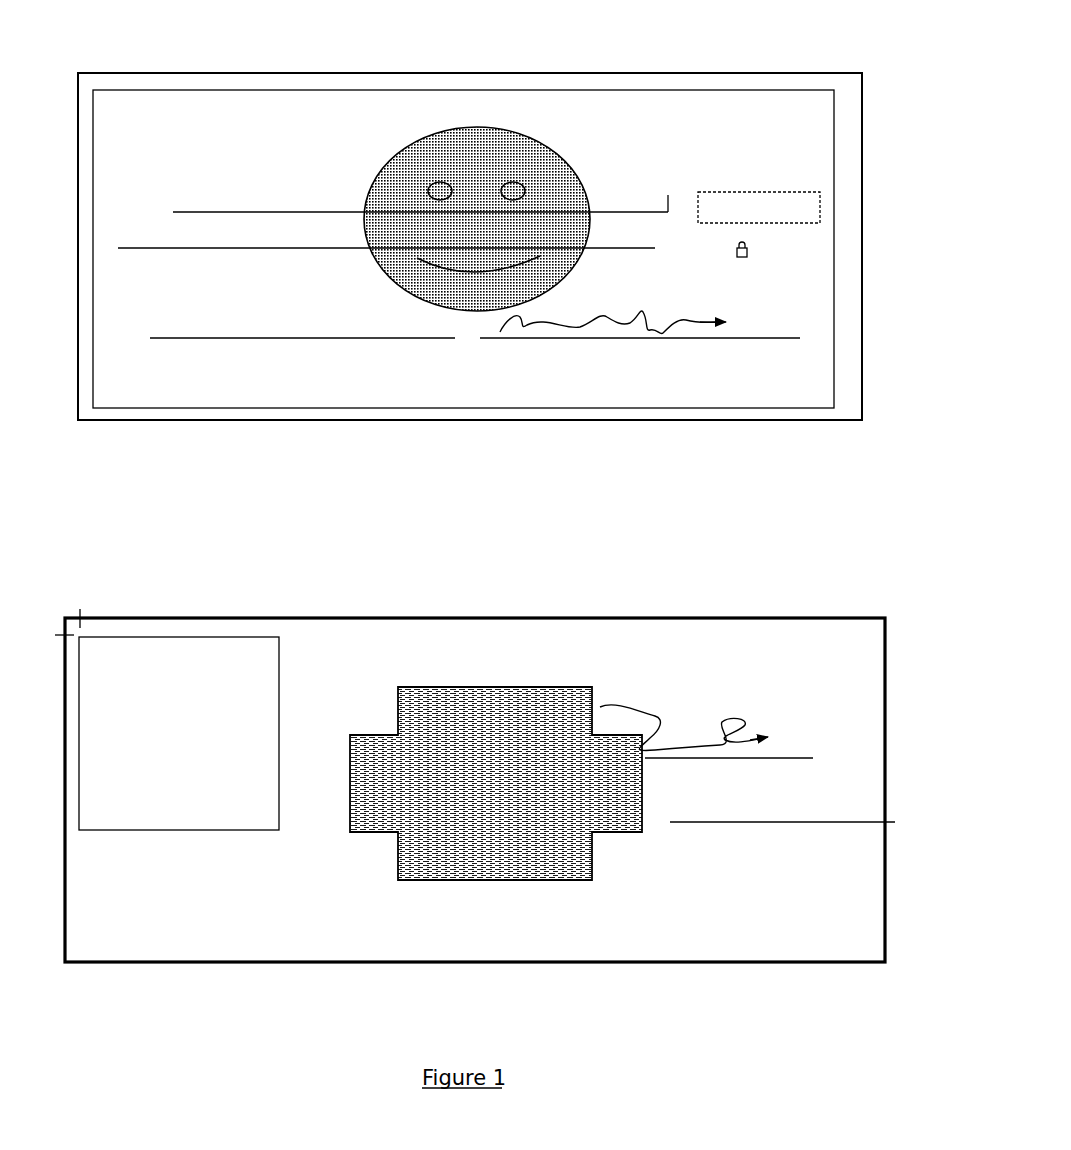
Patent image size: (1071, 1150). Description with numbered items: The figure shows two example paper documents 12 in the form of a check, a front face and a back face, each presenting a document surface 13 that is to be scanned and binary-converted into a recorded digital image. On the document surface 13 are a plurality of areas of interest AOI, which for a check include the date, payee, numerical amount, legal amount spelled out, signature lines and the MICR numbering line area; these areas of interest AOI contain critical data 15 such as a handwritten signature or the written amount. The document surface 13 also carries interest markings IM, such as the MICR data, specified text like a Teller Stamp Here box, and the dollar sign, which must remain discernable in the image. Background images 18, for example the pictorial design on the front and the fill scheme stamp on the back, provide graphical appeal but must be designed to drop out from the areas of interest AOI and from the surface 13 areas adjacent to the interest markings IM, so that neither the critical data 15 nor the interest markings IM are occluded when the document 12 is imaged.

The paper document 12 is at (787, 470).
The document surface 13 is at (788, 400).
The critical data 15 is at (380, 190).
The background images 18 is at (457, 723).
The interest markings IM is at (690, 197).
The areas of interest AOI is at (178, 635).